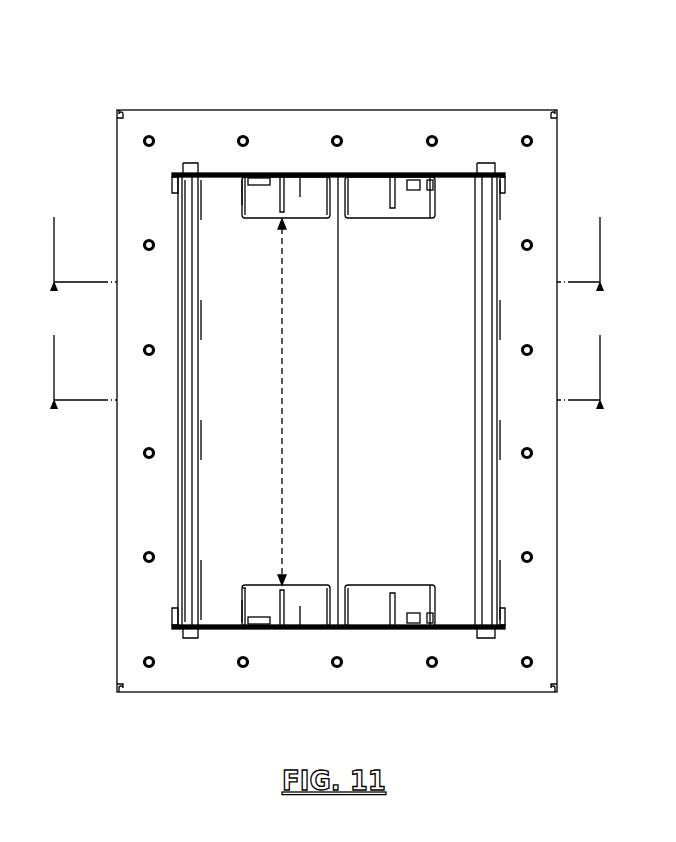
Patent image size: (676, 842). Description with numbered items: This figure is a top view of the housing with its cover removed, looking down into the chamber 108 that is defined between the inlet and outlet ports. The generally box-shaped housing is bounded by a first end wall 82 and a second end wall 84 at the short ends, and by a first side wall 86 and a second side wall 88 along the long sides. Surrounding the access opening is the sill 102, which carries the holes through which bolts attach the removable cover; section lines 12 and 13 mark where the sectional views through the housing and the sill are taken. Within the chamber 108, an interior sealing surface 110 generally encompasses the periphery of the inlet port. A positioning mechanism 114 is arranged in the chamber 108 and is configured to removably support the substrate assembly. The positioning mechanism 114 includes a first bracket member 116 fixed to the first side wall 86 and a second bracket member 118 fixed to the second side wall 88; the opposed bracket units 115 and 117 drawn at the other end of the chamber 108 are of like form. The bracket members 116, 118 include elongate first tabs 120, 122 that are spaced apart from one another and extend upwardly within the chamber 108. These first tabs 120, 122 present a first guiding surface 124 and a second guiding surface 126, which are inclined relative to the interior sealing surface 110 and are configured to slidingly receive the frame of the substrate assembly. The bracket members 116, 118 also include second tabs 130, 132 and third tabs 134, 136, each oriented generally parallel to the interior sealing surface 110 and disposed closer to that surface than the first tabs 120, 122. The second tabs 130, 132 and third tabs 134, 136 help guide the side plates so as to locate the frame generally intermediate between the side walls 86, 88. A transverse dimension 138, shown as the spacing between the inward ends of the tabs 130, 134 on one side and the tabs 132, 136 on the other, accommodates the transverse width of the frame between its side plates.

The section line 12- 12 is at (334, 234).
The section line 13- 13 is at (334, 352).
The first end wall 82 is at (186, 586).
The second end wall 84 is at (488, 596).
The first side wall 86 is at (465, 173).
The second side wall 88 is at (460, 633).
The sill 102 is at (528, 492).
The chamber 108 is at (442, 415).
The interior sealing surface 110 is at (203, 313).
The positioning mechanism 114 is at (250, 560).
The top right clip 115 is at (390, 197).
The first bracket member 116 is at (283, 189).
The bottom right clip 117 is at (390, 605).
The second bracket member 118 is at (288, 628).
The first tab 120 is at (326, 192).
The first tab 122 is at (316, 610).
The first guiding surface 124 is at (305, 205).
The second guiding surface 126 is at (305, 597).
The second tab 130 is at (262, 183).
The second tab 132 is at (258, 614).
The third tab 134 is at (242, 203).
The third tab 136 is at (209, 622).
The transverse dimension 138 is at (283, 347).